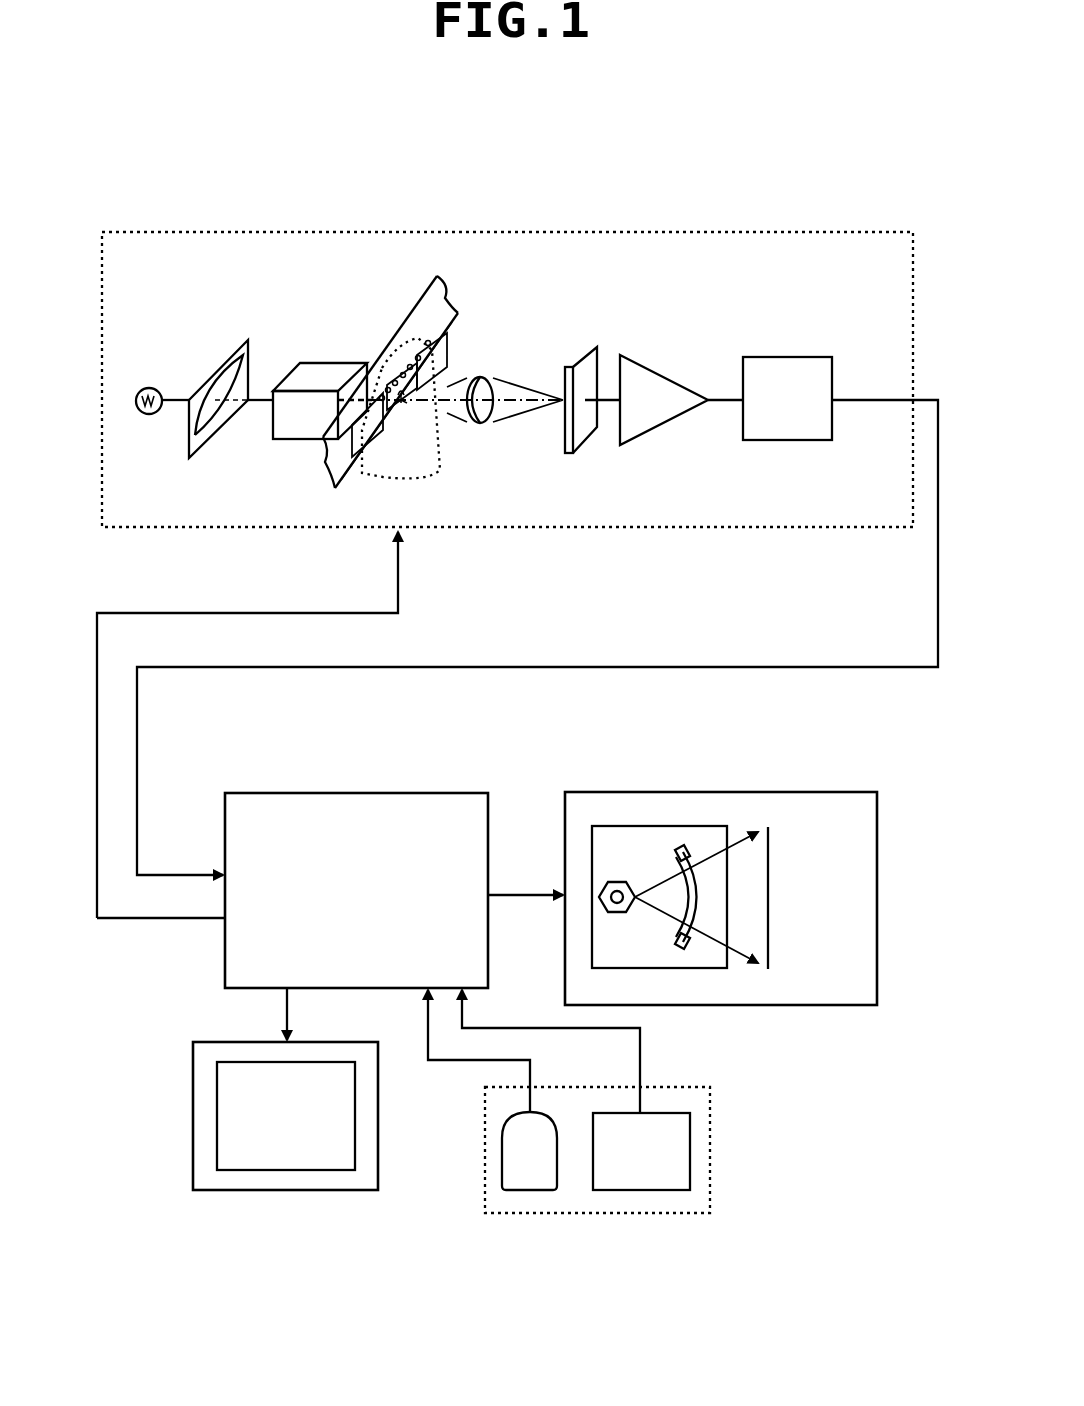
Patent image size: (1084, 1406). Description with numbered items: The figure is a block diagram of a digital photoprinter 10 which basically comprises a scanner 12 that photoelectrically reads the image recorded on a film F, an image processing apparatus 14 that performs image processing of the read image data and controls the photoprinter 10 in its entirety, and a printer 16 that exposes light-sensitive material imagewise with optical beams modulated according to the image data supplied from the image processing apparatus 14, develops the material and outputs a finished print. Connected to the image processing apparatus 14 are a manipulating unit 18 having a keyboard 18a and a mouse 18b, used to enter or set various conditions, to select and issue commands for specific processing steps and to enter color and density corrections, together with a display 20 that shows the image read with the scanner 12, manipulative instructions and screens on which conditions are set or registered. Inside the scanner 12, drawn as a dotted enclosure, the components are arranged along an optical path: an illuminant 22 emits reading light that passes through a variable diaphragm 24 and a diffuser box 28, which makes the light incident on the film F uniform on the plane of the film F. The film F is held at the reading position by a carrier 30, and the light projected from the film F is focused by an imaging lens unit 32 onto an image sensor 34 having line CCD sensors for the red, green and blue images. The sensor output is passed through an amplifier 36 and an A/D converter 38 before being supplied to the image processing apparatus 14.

The digital photoprinter 10 is at (788, 197).
The scanner 12 is at (330, 232).
The image processing apparatus 14 is at (385, 793).
The printer 16 is at (718, 792).
The manipulating unit 18 is at (575, 1215).
The keyboard 18a is at (645, 1192).
The mouse 18b is at (521, 1192).
The display 20 is at (275, 1192).
The illuminant 22 is at (147, 389).
The variable diaphragm 24 is at (230, 375).
The diffuser box 28 is at (318, 383).
The film F is at (447, 313).
The carrier 30 is at (442, 472).
The imaging lens unit 32 is at (480, 376).
The image sensor 34 is at (587, 370).
The amplifier 36 is at (664, 428).
The A/D converter 38 is at (813, 356).